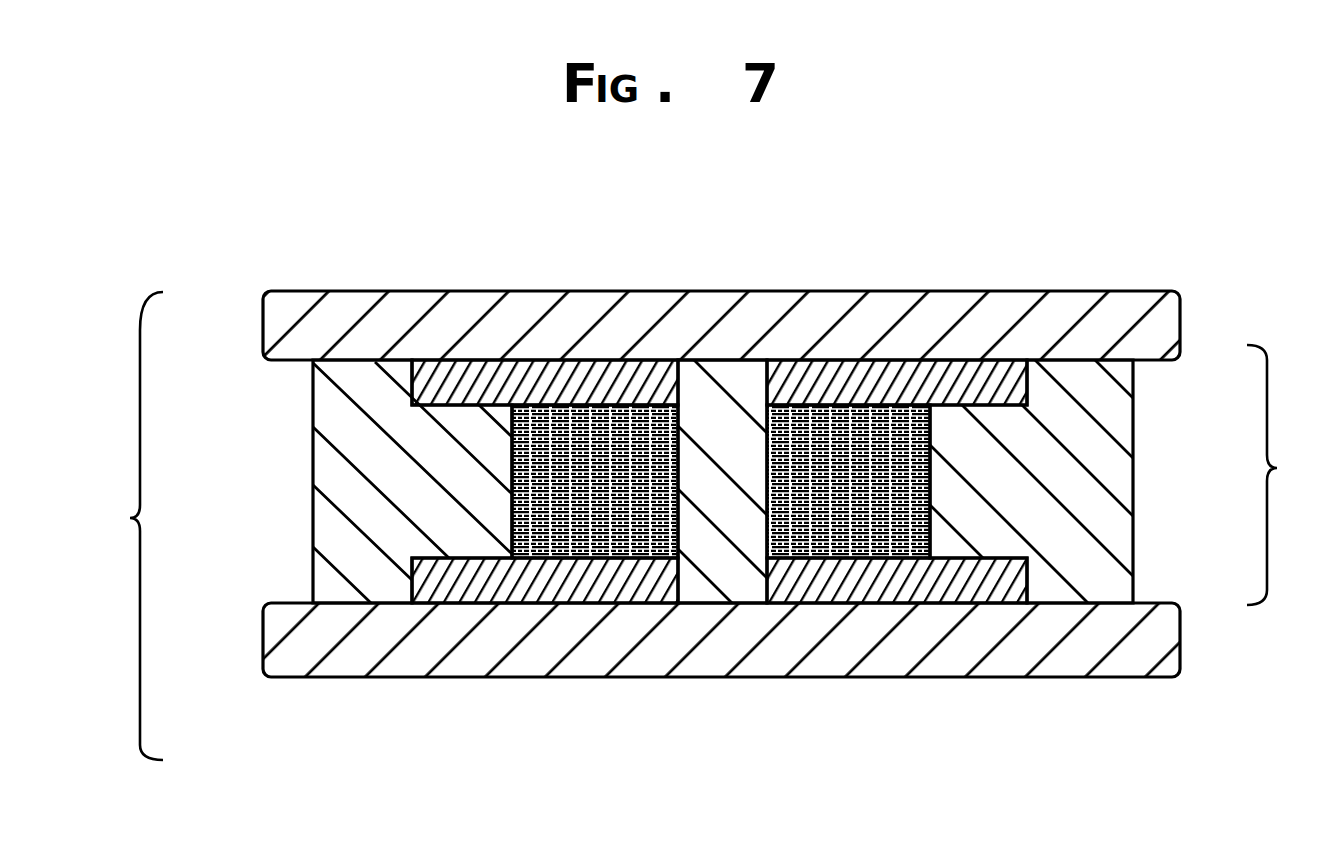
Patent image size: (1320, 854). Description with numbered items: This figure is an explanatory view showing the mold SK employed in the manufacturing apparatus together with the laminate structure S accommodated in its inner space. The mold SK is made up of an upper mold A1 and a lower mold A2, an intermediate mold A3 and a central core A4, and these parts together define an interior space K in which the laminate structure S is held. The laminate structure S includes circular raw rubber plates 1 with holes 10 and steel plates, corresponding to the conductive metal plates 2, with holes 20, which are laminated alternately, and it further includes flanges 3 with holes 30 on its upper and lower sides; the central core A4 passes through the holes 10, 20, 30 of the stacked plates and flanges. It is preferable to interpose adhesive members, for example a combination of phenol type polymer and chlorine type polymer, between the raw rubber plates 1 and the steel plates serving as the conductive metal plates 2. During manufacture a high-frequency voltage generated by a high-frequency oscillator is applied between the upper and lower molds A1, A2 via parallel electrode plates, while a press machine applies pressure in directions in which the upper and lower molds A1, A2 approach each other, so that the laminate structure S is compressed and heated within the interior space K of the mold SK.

The sensor chip stack SK is at (122, 526).
The upper mold A1 is at (276, 319).
The lower mold A2 is at (286, 643).
The intermediate mold A3 is at (329, 407).
The central core A4 is at (697, 587).
The interior space K is at (428, 388).
The laminate structure S is at (1274, 475).
The flange 3 is at (1023, 383).
The raw rubber plate 1 is at (940, 476).
The conductive metal plate 2 is at (1014, 481).
The hole 10 is at (750, 410).
The hole 20 is at (751, 419).
The hole 30 is at (752, 390).